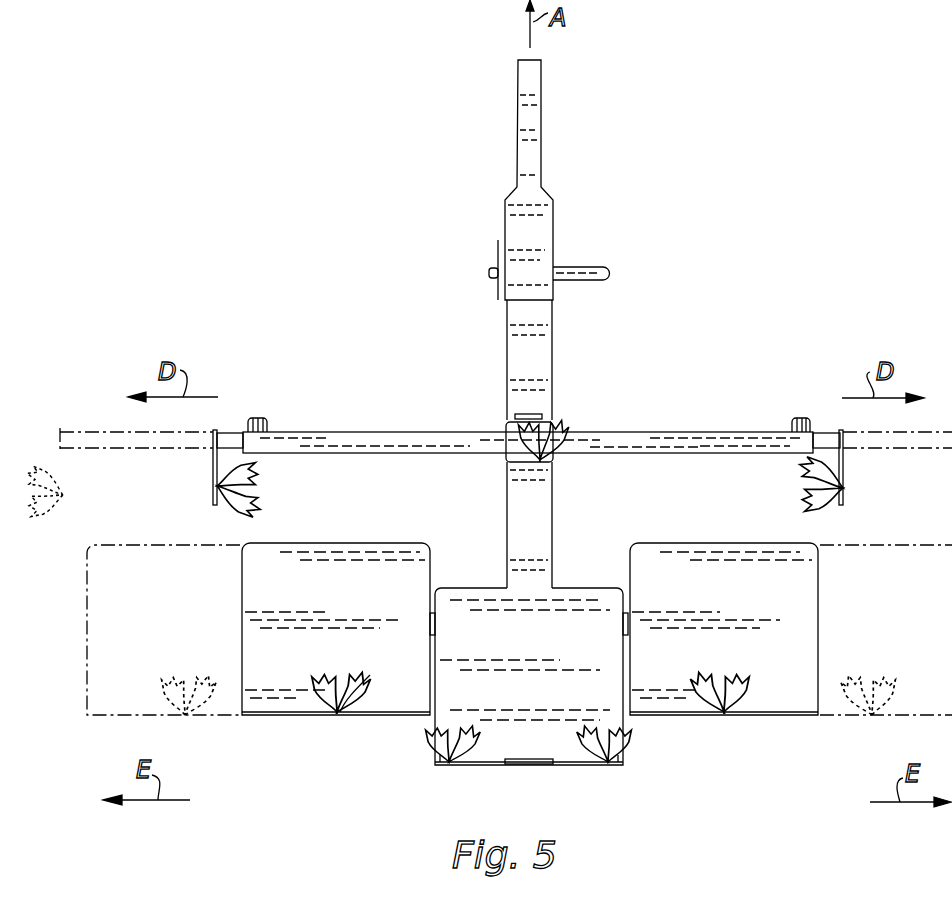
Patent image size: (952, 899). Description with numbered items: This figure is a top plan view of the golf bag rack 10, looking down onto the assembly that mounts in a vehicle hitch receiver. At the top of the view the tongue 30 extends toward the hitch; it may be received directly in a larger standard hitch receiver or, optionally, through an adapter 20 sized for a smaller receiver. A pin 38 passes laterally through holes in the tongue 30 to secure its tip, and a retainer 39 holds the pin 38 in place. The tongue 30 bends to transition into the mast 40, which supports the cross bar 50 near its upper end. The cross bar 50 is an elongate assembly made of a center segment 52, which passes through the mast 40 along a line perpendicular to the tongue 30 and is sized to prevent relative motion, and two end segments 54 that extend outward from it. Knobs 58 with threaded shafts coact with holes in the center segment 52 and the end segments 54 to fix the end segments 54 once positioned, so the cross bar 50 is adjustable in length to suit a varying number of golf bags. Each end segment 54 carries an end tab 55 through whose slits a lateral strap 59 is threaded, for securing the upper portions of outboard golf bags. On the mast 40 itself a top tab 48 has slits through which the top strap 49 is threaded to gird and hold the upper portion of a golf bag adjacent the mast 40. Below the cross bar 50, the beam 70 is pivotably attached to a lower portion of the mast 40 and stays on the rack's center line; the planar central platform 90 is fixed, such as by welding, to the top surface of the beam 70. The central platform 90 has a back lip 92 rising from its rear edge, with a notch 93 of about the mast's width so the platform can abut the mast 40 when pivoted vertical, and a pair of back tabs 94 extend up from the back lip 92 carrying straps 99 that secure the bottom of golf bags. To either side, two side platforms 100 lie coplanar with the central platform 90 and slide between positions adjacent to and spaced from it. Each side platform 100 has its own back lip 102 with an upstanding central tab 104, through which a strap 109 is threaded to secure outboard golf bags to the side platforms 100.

The golf bag rack 10 is at (328, 275).
The adapter 20 is at (535, 205).
The tongue 30 is at (520, 358).
The pin 38 is at (585, 270).
The retainer 39 is at (497, 290).
The mast 40 is at (533, 458).
The top tab 48 is at (536, 414).
The top strap 49 is at (548, 445).
The cross bar 50 is at (333, 447).
The center segment 52 is at (445, 447).
The end segments 54 is at (222, 440).
The end tabs 55 is at (215, 482).
The knobs 58 is at (262, 418).
The lateral straps 59 is at (258, 510).
The beam 70 is at (520, 538).
The central platform 90 is at (547, 645).
The back lip 92 is at (488, 766).
The notch 93 is at (545, 766).
The back tabs 94 is at (447, 766).
The straps 99 is at (432, 748).
The side platforms 100 is at (312, 595).
The back lip 102 is at (268, 718).
The central tab 104 is at (335, 714).
The strap 109 is at (354, 686).